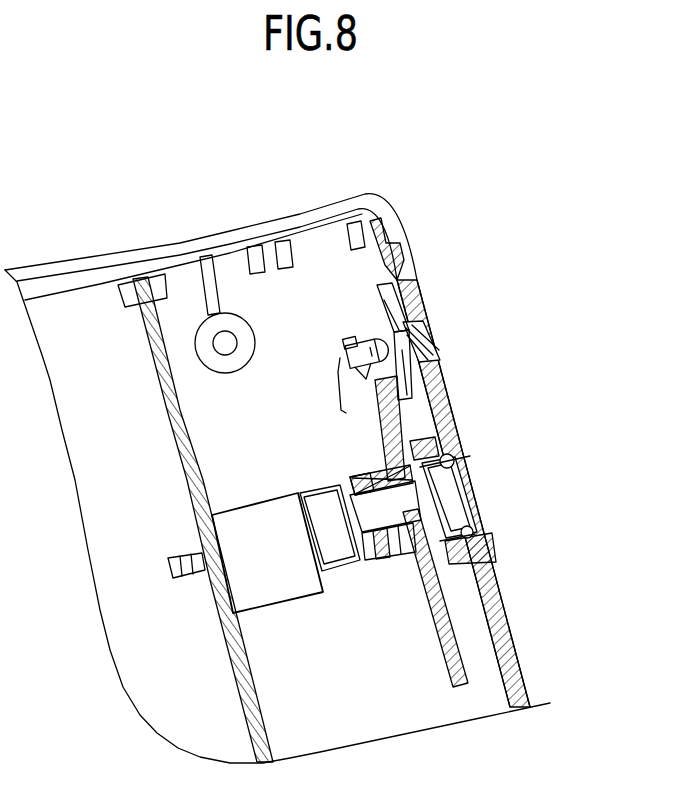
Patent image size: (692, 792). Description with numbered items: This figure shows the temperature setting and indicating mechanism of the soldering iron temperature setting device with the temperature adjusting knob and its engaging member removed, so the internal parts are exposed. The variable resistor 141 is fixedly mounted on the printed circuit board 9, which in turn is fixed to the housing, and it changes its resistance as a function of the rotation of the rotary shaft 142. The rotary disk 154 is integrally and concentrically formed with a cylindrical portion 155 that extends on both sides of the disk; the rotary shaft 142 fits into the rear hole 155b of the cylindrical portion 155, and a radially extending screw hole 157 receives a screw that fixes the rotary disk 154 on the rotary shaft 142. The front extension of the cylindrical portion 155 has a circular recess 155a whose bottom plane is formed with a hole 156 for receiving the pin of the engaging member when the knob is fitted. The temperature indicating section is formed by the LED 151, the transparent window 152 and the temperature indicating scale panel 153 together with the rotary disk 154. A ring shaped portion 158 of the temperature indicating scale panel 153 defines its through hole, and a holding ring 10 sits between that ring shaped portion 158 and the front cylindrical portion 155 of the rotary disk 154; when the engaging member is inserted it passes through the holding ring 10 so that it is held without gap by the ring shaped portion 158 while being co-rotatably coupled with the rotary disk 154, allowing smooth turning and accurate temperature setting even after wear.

The printed circuit board 9 is at (168, 412).
The holding ring 10 is at (453, 523).
The variable resistor 141 is at (247, 538).
The rotary shaft 142 is at (378, 468).
The LED 151 is at (352, 351).
The transparent window 152 is at (433, 331).
The temperature indicating scale panel 153 is at (530, 689).
The rotary disk 154 is at (447, 657).
The cylindrical portion 155 is at (335, 459).
The circular recess 155a is at (425, 468).
The rear hole 155b is at (373, 478).
The hole 156 is at (417, 560).
The screw hole 157 is at (377, 575).
The ring shaped portion 158 is at (470, 560).